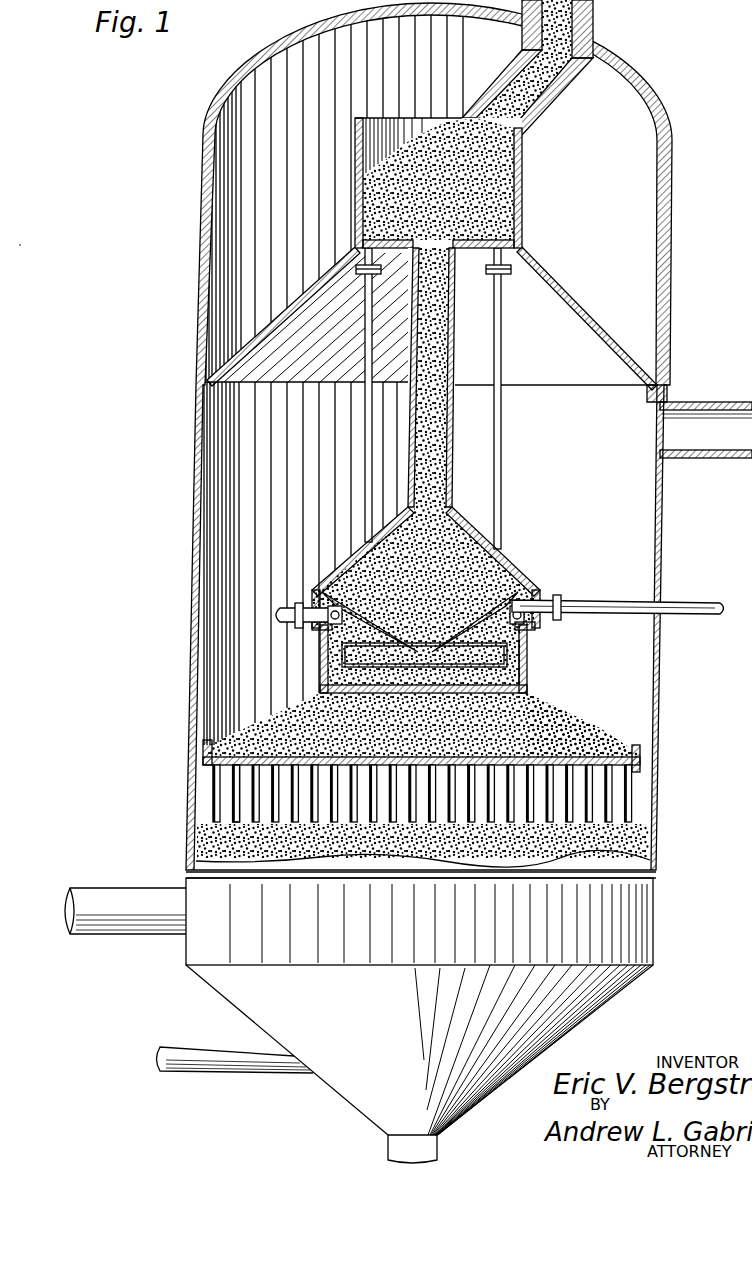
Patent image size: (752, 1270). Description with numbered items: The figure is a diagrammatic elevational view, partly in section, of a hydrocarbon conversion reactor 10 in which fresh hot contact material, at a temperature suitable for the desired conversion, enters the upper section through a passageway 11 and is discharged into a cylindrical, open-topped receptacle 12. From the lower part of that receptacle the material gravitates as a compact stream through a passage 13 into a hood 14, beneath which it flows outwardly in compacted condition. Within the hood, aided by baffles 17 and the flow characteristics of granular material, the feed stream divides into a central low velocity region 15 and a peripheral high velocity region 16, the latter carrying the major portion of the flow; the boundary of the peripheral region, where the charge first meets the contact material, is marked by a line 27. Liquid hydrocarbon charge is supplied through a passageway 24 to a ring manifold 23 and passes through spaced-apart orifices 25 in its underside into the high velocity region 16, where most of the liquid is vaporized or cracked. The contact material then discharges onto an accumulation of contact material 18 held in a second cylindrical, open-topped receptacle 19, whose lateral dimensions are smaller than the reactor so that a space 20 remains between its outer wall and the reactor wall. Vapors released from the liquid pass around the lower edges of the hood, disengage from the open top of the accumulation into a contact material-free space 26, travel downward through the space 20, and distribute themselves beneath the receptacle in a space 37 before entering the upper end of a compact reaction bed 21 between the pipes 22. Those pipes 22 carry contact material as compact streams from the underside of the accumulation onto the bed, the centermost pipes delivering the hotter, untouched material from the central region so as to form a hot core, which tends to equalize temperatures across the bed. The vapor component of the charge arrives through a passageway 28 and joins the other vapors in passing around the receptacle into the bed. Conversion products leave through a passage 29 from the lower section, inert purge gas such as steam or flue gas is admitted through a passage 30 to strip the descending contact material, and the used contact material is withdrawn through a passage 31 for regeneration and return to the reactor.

The conversion reactor 10 is at (673, 262).
The passageway 11 is at (594, 24).
The receptacle 12 is at (523, 186).
The passage 13 is at (423, 466).
The hood 14 is at (506, 563).
The central low velocity region 15 is at (490, 700).
The peripheral high velocity region 16 is at (335, 644).
The baffles 17 is at (528, 657).
The accumulation of contact material 18 is at (572, 734).
The receptacle 19 is at (208, 745).
The space 20 is at (645, 755).
The compact reaction bed 21 is at (648, 848).
The pipes 22 is at (608, 810).
The ring manifold 23 is at (532, 608).
The passageway 24 is at (690, 613).
The orifices 25 is at (528, 624).
The contact material-free space 26 is at (205, 685).
The line 27 is at (530, 680).
The passageway 28 is at (716, 460).
The passage 29 is at (106, 872).
The passage 30 is at (206, 1030).
The passage 31 is at (384, 1143).
The space 37 is at (240, 790).